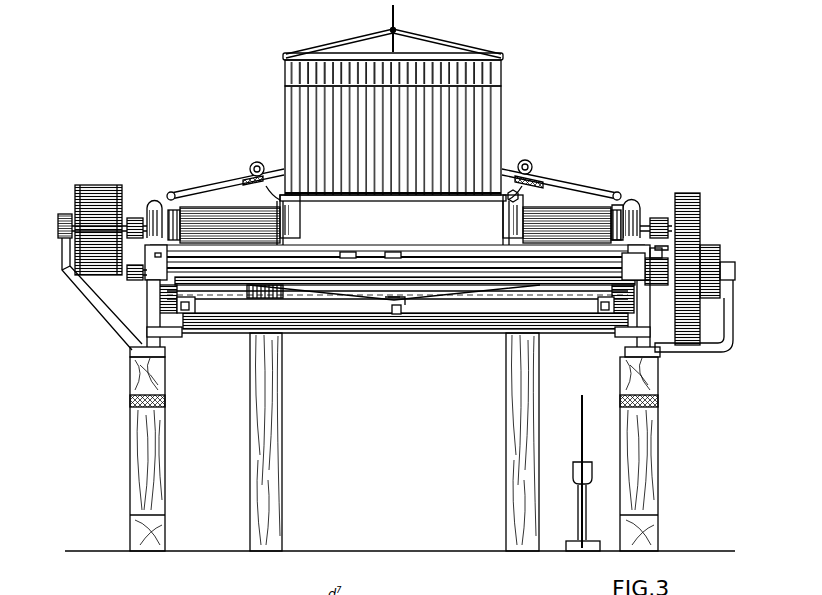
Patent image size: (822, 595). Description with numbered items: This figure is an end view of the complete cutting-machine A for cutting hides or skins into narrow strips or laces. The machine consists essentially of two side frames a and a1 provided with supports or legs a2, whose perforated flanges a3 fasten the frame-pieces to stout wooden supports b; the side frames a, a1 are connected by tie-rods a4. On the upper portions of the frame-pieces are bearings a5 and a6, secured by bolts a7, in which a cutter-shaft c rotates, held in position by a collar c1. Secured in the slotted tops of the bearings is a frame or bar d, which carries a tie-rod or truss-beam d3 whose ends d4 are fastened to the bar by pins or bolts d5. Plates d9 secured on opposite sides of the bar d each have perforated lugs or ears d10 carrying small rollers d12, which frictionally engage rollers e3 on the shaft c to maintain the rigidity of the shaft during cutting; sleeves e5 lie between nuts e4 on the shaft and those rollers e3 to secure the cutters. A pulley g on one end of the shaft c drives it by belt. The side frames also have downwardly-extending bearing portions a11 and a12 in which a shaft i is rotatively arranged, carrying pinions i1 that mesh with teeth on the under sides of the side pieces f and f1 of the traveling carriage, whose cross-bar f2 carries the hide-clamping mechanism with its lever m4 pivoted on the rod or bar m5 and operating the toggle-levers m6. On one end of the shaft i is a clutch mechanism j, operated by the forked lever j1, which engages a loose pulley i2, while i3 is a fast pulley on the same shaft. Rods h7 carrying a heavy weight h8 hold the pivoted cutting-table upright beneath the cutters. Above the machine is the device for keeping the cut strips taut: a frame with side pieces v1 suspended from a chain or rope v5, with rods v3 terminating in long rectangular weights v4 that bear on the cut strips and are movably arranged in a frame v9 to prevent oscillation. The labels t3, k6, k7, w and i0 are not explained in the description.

The chain or rope v5 is at (395, 30).
The side pieces v1 is at (477, 57).
The rods v3 is at (312, 70).
The rectangular weights v4 is at (455, 125).
The frame v9 is at (403, 195).
The frame or bar d is at (588, 168).
The ends of truss-beam d4 is at (172, 192).
The small rollers d12 is at (250, 180).
The pivot ring t3 is at (257, 162).
The plates d9 is at (268, 170).
The tie-rod or truss-beam d3 is at (188, 190).
The perforated lugs or ears d10 is at (211, 188).
The pins or bolts d5 is at (170, 195).
The bearing a5 is at (147, 205).
The bolts a7 is at (152, 204).
The bearing a6 is at (642, 205).
The cutter-shaft c is at (143, 220).
The collar c1 is at (58, 228).
The pulley g is at (92, 193).
The sleeves e5 is at (395, 225).
The nuts e4 is at (176, 216).
The rollers e3 is at (285, 228).
The side frame a is at (155, 250).
The side frame a1 is at (645, 255).
The bearing portion a11 is at (160, 300).
The bearing portion a12 is at (615, 345).
The slide box k6 is at (185, 300).
The supports or legs a2 is at (160, 335).
The perforated flanges a3 is at (132, 354).
The cross-bar f2 is at (438, 258).
The rod or bar m5 is at (338, 258).
The tie-rods a4 is at (352, 330).
The lever m4 is at (395, 258).
The toggle-levers m6 is at (258, 262).
The rods h7 is at (395, 312).
The heavy weight h8 is at (490, 312).
The diagonal brace k7 is at (180, 308).
The side piece f is at (138, 274).
The loose pulley i2 is at (696, 220).
The fast pulley i3 is at (708, 262).
The shaft i is at (737, 270).
The clutch mechanism j is at (656, 286).
The lever j1 is at (670, 250).
The side piece f1 is at (640, 262).
The supports b is at (162, 377).
The center post w is at (282, 426).
The cutting-machine A is at (388, 378).
The pinions i1 is at (581, 427).
The cup i0 is at (587, 468).